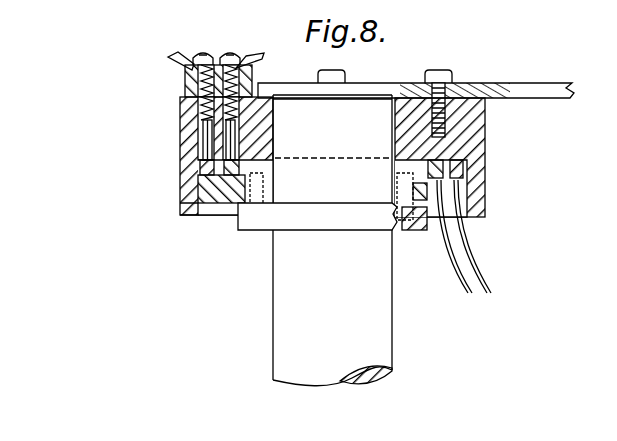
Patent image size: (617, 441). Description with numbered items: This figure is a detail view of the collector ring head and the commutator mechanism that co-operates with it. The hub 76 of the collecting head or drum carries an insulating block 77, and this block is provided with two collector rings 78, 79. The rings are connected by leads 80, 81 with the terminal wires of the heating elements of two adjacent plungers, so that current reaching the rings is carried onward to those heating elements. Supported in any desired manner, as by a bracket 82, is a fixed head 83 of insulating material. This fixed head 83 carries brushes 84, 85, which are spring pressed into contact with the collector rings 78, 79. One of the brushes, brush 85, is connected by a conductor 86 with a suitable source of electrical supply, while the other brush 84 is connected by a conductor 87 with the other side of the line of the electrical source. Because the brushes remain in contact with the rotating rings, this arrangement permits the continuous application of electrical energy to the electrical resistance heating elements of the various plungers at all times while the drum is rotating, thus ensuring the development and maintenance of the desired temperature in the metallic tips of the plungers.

The hub 76 is at (300, 330).
The insulating block 77 is at (222, 207).
The collector ring 78 is at (180, 170).
The collector ring 79 is at (182, 202).
The lead 80 is at (453, 275).
The lead 81 is at (487, 277).
The bracket 82 is at (548, 93).
The fixed head 83 is at (487, 147).
The brush 84 is at (205, 131).
The brush 85 is at (182, 122).
The conductor 86 is at (262, 60).
The conductor 87 is at (180, 57).